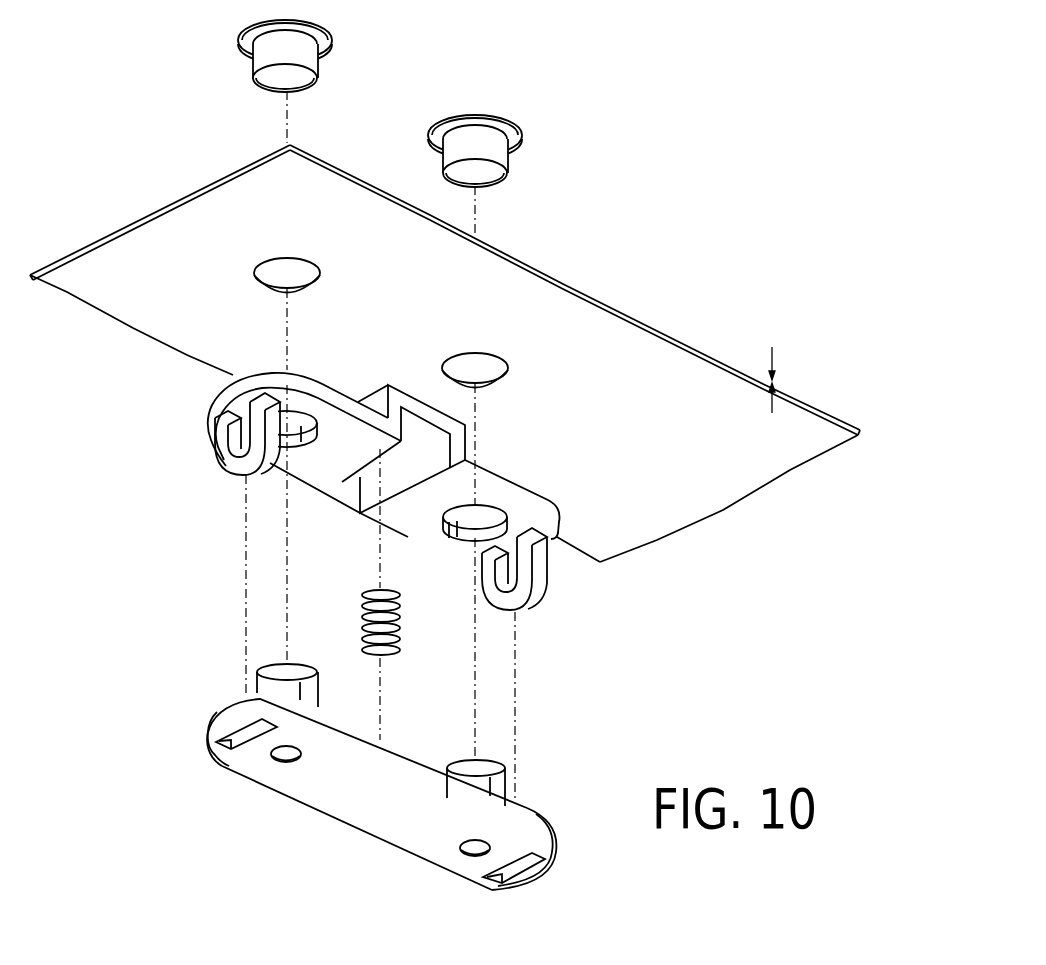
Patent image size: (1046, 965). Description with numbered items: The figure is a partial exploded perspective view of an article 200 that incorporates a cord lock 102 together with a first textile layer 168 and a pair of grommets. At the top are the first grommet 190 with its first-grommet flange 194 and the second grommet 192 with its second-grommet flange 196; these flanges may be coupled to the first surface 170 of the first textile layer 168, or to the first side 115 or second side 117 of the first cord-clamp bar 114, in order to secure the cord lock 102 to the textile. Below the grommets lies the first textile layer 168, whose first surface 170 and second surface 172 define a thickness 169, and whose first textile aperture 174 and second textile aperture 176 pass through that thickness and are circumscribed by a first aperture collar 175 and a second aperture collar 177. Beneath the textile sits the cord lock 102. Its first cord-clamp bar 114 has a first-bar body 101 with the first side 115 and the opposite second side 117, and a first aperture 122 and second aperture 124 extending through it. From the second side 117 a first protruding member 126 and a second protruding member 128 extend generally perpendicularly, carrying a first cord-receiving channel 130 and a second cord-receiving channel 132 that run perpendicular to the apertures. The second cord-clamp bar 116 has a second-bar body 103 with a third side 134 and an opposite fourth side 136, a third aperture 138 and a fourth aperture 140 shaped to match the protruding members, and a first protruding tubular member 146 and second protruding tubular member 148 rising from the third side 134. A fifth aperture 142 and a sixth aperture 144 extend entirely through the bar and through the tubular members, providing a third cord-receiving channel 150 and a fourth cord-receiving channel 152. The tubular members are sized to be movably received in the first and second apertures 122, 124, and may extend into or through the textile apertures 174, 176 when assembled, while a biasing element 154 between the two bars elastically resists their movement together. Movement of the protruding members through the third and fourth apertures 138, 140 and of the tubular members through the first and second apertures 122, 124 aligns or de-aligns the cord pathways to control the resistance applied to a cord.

The article 200 is at (666, 85).
The cord lock 102 is at (556, 680).
The first-bar body 101 is at (238, 413).
The second-bar body 103 is at (210, 722).
The first cord-clamp bar 114 is at (557, 514).
The first side 115 is at (228, 384).
The second side 117 is at (211, 423).
The first aperture 122 is at (302, 446).
The second aperture 124 is at (466, 533).
The first protruding member 126 is at (243, 475).
The second protruding member 128 is at (528, 599).
The first cord-receiving channel 130 is at (238, 447).
The second cord-receiving channel 132 is at (503, 572).
The third side 134 is at (238, 703).
The fourth side 136 is at (222, 752).
The third aperture 138 is at (245, 740).
The fourth aperture 140 is at (521, 869).
The fifth aperture 142 is at (283, 762).
The sixth aperture 144 is at (460, 862).
The first protruding tubular member 146 is at (318, 694).
The second protruding tubular member 148 is at (465, 770).
The third cord-receiving channel 150 is at (292, 757).
The fourth cord-receiving channel 152 is at (475, 858).
The biasing element 154 is at (400, 618).
The second cord-clamp bar 116 is at (553, 840).
The first textile layer 168 is at (672, 361).
The thickness 169 is at (775, 368).
The first surface 170 is at (818, 400).
The second surface 172 is at (812, 442).
The first textile aperture 174 is at (300, 267).
The first aperture collar 175 is at (262, 286).
The second textile aperture 176 is at (490, 364).
The second aperture collar 177 is at (491, 380).
The first grommet 190 is at (262, 52).
The second grommet 192 is at (452, 147).
The first-grommet flange 194 is at (330, 34).
The second-grommet flange 196 is at (516, 130).